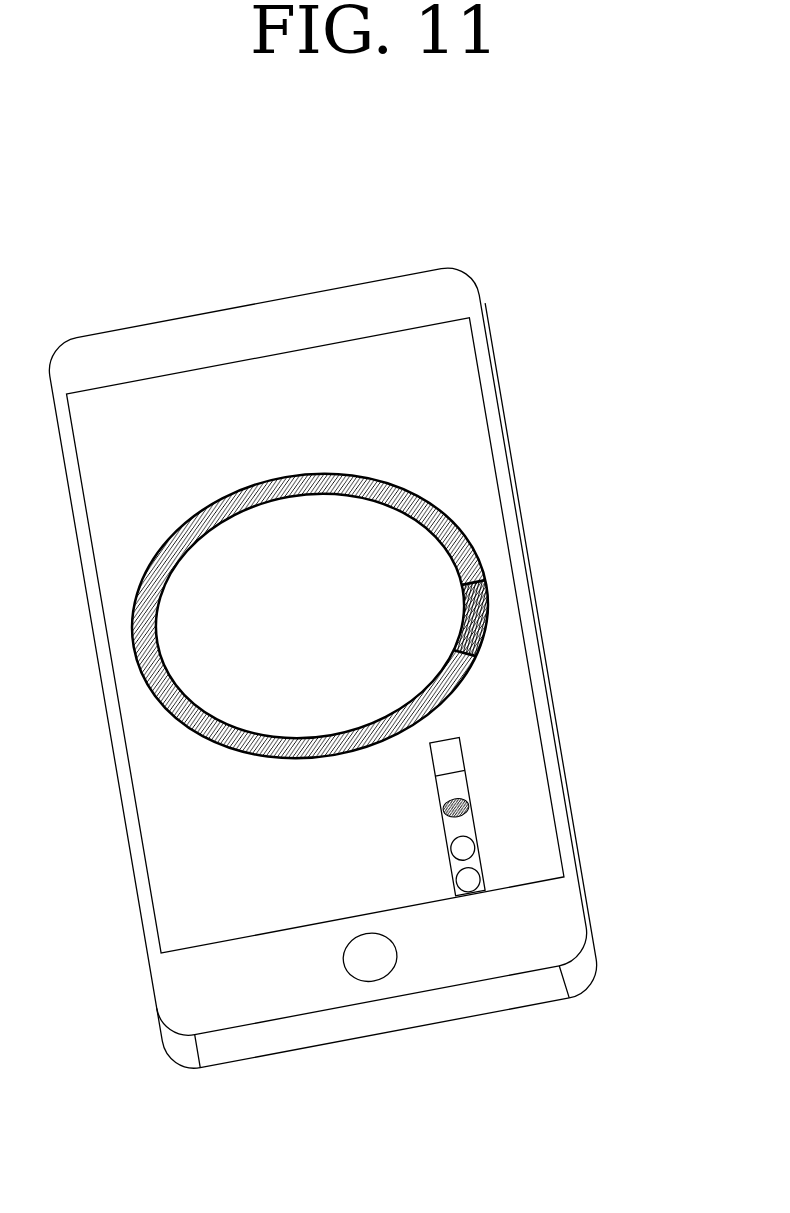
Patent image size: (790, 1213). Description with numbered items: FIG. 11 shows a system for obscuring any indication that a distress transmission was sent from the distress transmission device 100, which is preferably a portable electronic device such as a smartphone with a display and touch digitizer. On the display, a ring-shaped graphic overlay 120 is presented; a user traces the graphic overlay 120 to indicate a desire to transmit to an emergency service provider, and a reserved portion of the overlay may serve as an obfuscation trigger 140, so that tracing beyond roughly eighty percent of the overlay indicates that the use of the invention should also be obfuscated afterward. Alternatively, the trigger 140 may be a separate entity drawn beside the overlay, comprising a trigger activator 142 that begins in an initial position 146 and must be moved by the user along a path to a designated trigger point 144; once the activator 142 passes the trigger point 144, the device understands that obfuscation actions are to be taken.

The distress transmission device 100 is at (418, 204).
The graphic overlay 120 is at (467, 530).
The obfuscation trigger 140 is at (490, 608).
The trigger activator 142 is at (470, 810).
The designated trigger point 144 is at (470, 777).
The initial position 146 is at (482, 882).